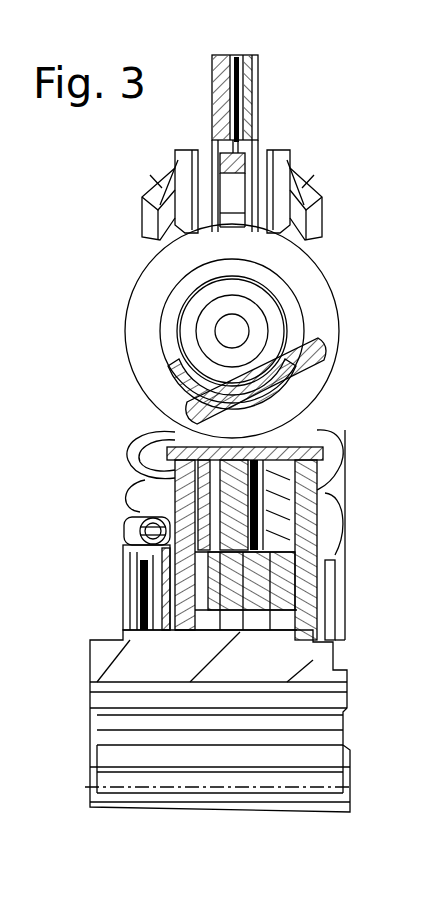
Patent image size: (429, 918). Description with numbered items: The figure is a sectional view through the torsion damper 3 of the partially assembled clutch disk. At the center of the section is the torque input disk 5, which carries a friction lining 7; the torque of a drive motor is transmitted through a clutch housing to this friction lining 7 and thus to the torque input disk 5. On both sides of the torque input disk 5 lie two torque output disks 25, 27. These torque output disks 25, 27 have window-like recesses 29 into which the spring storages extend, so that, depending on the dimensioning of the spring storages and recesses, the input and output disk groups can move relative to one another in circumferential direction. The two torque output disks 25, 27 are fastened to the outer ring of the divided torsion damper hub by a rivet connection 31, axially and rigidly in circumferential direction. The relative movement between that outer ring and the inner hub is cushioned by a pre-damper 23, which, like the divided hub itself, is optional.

The torsion damper 3 is at (90, 256).
The torque input disk 5 is at (254, 153).
The friction lining 7 is at (250, 62).
The pre-damper 23 is at (112, 522).
The torque output disk 25 is at (177, 170).
The torque output disk 27 is at (300, 182).
The window-like recesses 29 is at (310, 257).
The rivet connection 31 is at (320, 583).